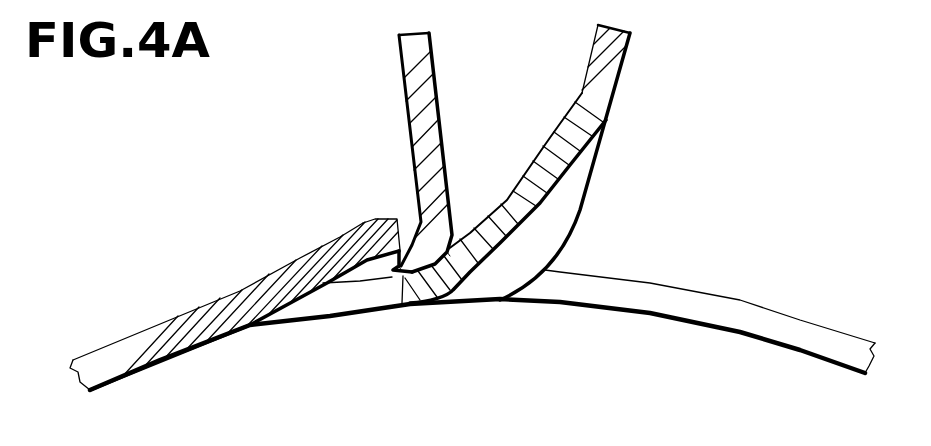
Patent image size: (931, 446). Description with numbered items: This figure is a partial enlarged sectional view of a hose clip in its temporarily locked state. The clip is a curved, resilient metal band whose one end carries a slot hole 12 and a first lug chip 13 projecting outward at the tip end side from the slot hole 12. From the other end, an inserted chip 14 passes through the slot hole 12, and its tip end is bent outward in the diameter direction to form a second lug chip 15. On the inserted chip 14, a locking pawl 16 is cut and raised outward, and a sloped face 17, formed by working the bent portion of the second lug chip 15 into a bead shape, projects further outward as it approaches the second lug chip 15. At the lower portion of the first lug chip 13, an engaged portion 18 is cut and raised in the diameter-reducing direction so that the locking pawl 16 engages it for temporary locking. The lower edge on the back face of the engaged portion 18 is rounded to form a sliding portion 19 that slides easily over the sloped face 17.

The slot hole 12 is at (723, 295).
The first lug chip 13 is at (404, 52).
The inserted chip 14 is at (118, 340).
The second lug chip 15 is at (617, 63).
The locking pawl 16 is at (368, 220).
The sloped face 17 is at (518, 187).
The engaged portion 18 is at (399, 270).
The sliding portion 19 is at (443, 268).